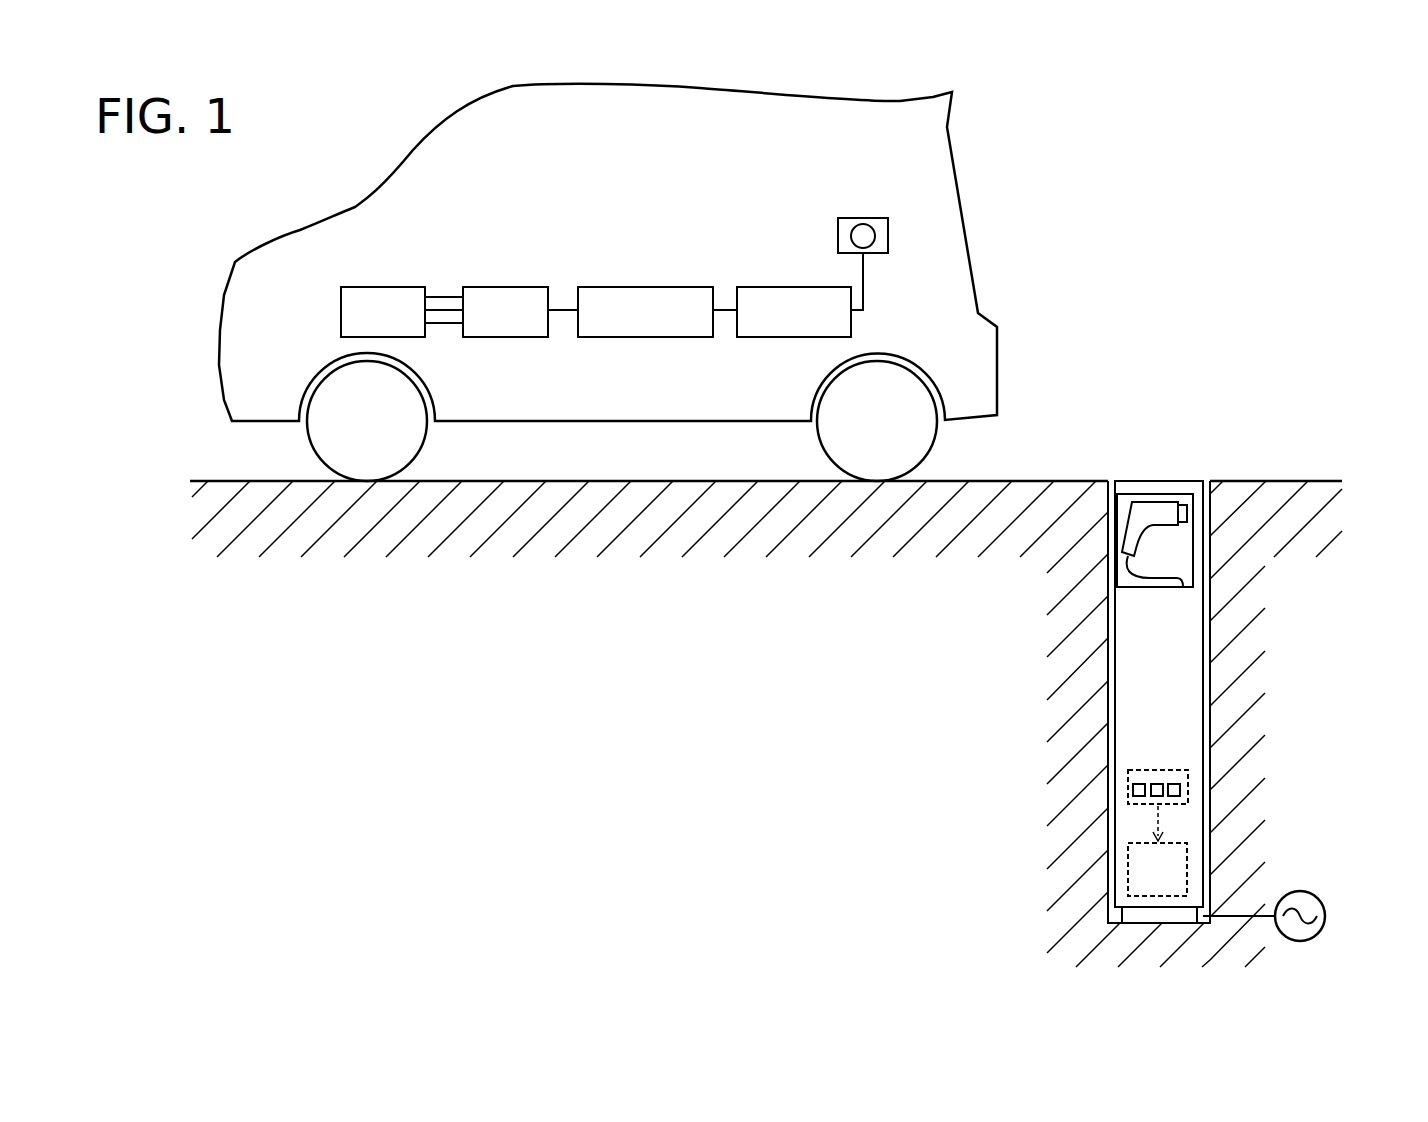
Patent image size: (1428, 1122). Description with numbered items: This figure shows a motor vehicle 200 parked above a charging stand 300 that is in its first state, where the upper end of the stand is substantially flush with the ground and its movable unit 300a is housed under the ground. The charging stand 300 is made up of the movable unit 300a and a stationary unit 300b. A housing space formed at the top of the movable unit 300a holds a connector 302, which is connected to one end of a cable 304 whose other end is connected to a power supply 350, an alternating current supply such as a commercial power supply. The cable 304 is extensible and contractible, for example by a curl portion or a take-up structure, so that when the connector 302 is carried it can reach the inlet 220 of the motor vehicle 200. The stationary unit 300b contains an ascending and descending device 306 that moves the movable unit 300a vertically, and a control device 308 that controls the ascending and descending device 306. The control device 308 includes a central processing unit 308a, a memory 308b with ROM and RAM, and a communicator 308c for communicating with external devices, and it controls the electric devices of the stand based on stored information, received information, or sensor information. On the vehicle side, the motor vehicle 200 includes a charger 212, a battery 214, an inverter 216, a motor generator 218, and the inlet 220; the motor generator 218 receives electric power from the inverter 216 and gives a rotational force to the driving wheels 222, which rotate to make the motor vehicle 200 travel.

The motor vehicle 200 is at (777, 95).
The charger 212 is at (801, 286).
The battery 214 is at (653, 286).
The inverter 216 is at (505, 286).
The motor generator 218 is at (381, 286).
The inlet 220 is at (862, 218).
The driving wheels 222 is at (430, 396).
The charging stand 300 is at (1167, 683).
The movable unit 300a is at (1192, 481).
The stationary unit 300b is at (1177, 925).
The connector 302 is at (1165, 527).
The cable 304 is at (1161, 580).
The ascending and descending device 306 is at (1187, 863).
The control device 308 is at (1167, 789).
The central processing unit 308a is at (1178, 780).
The memory 308b is at (1155, 780).
The communicator 308c is at (1140, 805).
The power supply 350 is at (1326, 916).